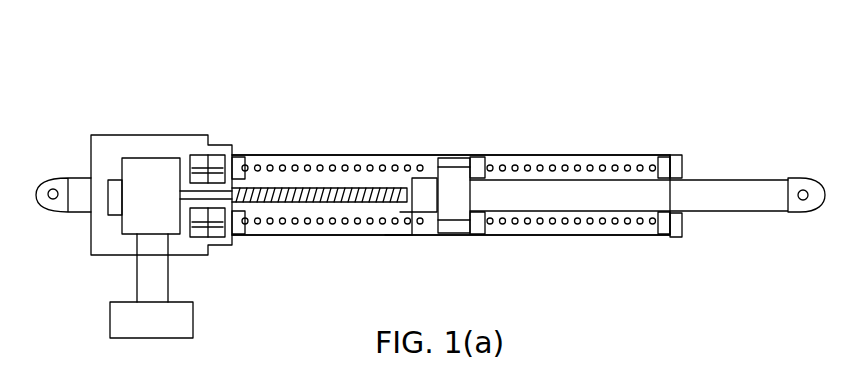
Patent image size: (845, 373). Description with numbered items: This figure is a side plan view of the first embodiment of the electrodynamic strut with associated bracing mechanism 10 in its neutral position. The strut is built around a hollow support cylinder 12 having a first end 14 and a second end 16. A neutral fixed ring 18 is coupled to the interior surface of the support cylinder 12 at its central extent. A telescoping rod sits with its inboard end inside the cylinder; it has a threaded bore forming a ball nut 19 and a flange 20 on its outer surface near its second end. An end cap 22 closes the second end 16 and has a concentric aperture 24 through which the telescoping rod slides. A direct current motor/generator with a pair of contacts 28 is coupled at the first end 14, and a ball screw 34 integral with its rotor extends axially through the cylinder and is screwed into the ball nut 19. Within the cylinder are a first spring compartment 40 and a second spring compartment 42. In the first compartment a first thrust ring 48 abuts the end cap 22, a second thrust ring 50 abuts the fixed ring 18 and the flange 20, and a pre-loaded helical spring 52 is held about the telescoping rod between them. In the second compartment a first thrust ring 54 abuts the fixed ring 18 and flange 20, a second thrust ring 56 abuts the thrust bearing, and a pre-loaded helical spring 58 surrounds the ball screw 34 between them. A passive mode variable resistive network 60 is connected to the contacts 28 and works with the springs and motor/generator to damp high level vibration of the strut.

The electrodynamic strut with associated bracing mechanism 10 is at (710, 105).
The support cylinder 12 is at (610, 235).
The first end 14 is at (246, 237).
The second end 16 is at (666, 235).
The neutral fixed ring 18 is at (453, 155).
The ball nut 19 is at (394, 237).
The flange 20 is at (457, 200).
The end cap 22 is at (692, 158).
The concentric aperture 24 is at (708, 213).
The contacts 28 is at (168, 257).
The ball screw 34 is at (351, 188).
The first spring compartment 40 is at (565, 138).
The second spring compartment 42 is at (346, 239).
The first thrust ring 48 is at (658, 157).
The second thrust ring 50 is at (486, 157).
The pre-loaded helical spring 52 is at (603, 163).
The first thrust ring 54 is at (424, 157).
The second thrust ring 56 is at (243, 157).
The pre-loaded helical spring 58 is at (311, 155).
The passive mode variable resistive network 60 is at (193, 320).